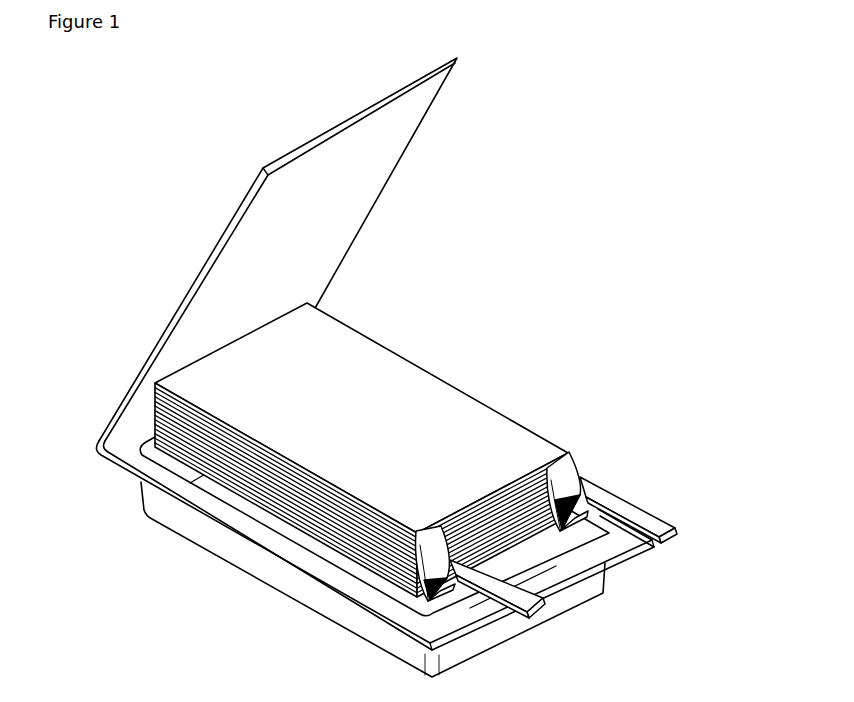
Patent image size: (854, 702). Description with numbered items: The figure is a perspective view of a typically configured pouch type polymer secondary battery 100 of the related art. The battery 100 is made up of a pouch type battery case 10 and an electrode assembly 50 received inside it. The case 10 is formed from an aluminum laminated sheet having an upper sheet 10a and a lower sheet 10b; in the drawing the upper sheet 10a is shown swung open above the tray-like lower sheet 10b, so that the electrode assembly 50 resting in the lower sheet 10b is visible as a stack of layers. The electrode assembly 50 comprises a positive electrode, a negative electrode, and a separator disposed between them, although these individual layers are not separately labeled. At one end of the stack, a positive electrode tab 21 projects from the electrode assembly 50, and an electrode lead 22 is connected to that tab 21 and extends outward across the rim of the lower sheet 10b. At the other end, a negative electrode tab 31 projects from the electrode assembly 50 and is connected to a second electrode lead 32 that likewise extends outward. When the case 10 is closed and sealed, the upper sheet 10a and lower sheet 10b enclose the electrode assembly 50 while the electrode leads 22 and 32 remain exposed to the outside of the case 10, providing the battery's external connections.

The pouch type polymer secondary battery 100 is at (385, 367).
The pouch type battery case 10 is at (345, 367).
The upper sheet 10a is at (393, 176).
The lower sheet 10b is at (243, 553).
The electrode assembly 50 is at (440, 373).
The positive electrode tab 21 is at (410, 594).
The electrode lead 22 is at (530, 606).
The negative electrode tab 31 is at (567, 471).
The electrode lead 32 is at (673, 537).